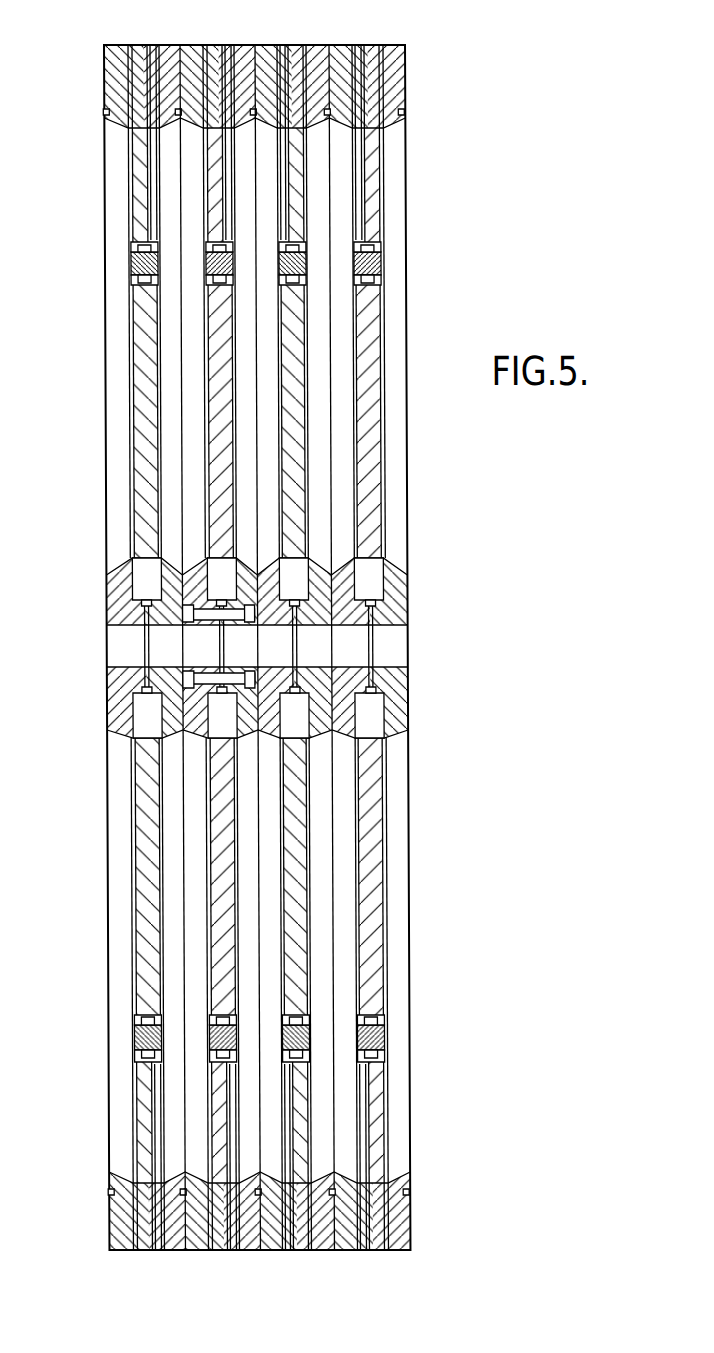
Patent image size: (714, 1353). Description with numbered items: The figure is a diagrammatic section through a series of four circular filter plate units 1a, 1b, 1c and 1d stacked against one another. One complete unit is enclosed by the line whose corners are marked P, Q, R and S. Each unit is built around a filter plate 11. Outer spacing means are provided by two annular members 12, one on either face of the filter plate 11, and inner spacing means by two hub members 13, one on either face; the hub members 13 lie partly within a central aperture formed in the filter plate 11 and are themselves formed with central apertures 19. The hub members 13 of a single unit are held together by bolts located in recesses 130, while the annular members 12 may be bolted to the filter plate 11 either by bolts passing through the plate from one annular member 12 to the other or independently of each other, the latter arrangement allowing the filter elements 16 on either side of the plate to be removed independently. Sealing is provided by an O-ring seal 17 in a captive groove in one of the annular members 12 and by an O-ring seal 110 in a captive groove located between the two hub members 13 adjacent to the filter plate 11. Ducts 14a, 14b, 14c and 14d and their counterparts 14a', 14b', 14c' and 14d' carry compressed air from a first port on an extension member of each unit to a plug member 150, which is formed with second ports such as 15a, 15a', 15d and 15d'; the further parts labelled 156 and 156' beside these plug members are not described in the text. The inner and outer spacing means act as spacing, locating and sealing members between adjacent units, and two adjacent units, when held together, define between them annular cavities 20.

The annular member 12 is at (190, 84).
The O-ring seal 17 is at (257, 108).
The corner of line PQRS P is at (185, 335).
The corner of line PQRS Q is at (257, 336).
The corner of line PQRS R is at (264, 966).
The corner of line PQRS S is at (188, 966).
The filter plate unit 1a is at (146, 1257).
The filter plate unit 1b is at (230, 1258).
The filter plate unit 1c is at (297, 1258).
The filter plate unit 1d is at (371, 1257).
The duct 14a' is at (109, 143).
The duct 14b' is at (147, 143).
The duct 14c' is at (366, 143).
The duct 14d' is at (408, 143).
The second port 15a' is at (222, 250).
The second port 15d' is at (263, 257).
The plug member 150 is at (215, 266).
The upper nut 156' is at (149, 333).
The annular cavity 20 is at (188, 337).
The filter plate 11 is at (210, 455).
The filter element 16 is at (245, 800).
The O-ring seal 110 is at (142, 690).
The central aperture 19 is at (130, 640).
The hub member 13 is at (118, 708).
The recess 130 is at (202, 608).
The second port 15a is at (187, 1015).
The second port 15d is at (340, 1000).
The lower nut 156 is at (151, 974).
The duct 14a is at (113, 1156).
The duct 14b is at (151, 1156).
The duct 14c is at (374, 1156).
The duct 14d is at (413, 1156).